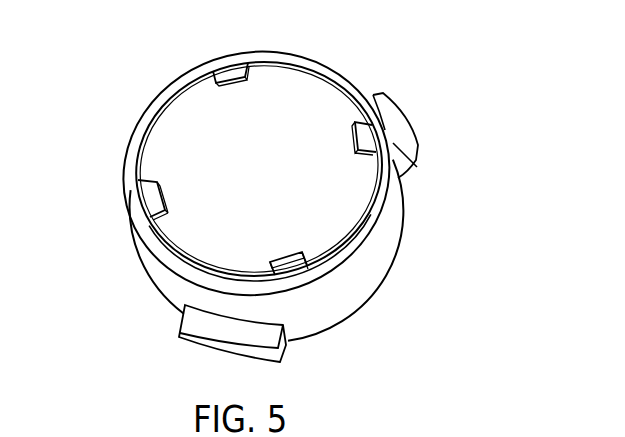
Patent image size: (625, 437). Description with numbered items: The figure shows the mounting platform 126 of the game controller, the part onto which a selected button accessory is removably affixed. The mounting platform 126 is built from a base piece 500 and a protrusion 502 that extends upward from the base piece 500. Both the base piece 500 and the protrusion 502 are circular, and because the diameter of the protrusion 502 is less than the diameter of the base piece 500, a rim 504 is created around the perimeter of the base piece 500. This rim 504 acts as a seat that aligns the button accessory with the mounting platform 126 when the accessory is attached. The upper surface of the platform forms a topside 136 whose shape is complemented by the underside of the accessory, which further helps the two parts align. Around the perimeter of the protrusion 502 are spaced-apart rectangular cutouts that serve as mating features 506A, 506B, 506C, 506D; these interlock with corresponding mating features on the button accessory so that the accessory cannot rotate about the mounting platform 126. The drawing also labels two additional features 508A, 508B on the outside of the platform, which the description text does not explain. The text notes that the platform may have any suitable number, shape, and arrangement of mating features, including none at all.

The mounting platform 126 is at (451, 48).
The topside of the mounting platform 136 is at (142, 147).
The base piece 500 is at (168, 278).
The protrusion 502 is at (190, 102).
The rim 504 is at (365, 228).
The mating feature 506A is at (368, 142).
The mating feature 506B is at (292, 268).
The mating feature 506C is at (150, 207).
The retaining tab 506D is at (228, 73).
The outer lug 508A is at (382, 110).
The outer lug 508B is at (195, 332).